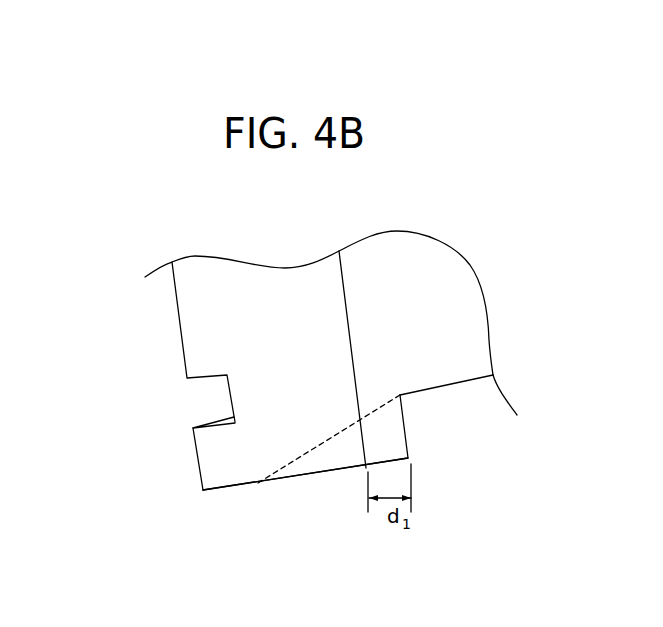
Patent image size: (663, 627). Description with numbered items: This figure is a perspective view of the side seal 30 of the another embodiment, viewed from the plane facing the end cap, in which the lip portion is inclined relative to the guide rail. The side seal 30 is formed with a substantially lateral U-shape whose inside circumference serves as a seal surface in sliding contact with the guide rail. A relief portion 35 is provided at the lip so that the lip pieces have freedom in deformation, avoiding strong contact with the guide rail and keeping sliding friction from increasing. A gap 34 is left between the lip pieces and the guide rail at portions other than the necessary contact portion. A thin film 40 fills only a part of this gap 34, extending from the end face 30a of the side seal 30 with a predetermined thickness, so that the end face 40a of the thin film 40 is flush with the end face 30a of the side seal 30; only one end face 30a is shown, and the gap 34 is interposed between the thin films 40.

The side seal 30 is at (157, 342).
The relief portion 35 is at (213, 410).
The end face of the side seal 30a is at (217, 459).
The thin film 40 is at (288, 492).
The end face of the thin film 40a is at (338, 457).
The gap 34 is at (435, 405).